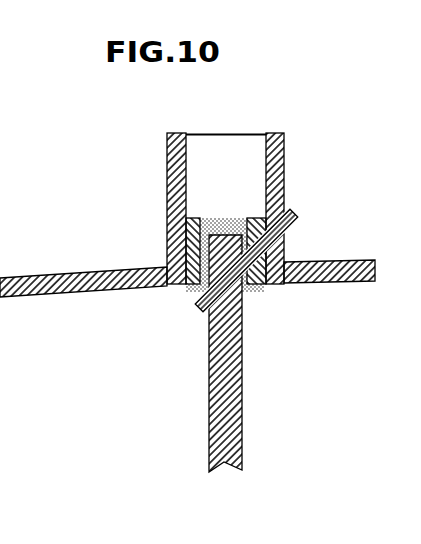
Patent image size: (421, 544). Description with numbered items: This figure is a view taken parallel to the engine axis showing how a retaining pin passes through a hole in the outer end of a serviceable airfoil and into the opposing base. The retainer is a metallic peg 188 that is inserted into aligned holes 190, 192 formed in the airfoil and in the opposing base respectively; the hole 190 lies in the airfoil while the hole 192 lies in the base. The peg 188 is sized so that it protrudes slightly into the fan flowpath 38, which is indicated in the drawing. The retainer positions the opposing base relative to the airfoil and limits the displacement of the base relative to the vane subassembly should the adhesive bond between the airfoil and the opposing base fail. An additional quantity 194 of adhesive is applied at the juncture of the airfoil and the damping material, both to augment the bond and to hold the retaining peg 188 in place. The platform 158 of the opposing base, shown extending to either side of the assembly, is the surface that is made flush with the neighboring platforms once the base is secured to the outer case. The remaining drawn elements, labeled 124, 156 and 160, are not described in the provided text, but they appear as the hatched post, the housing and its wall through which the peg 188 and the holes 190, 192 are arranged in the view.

The fan flowpath 38 is at (143, 390).
The post 124 is at (243, 396).
The housing 156 is at (206, 201).
The platform 158 is at (82, 298).
The housing wall 160 is at (168, 163).
The metallic peg 188 is at (285, 228).
The hole 190 is at (196, 303).
The hole 192 is at (296, 214).
The additional quantity of adhesive 194 is at (240, 293).